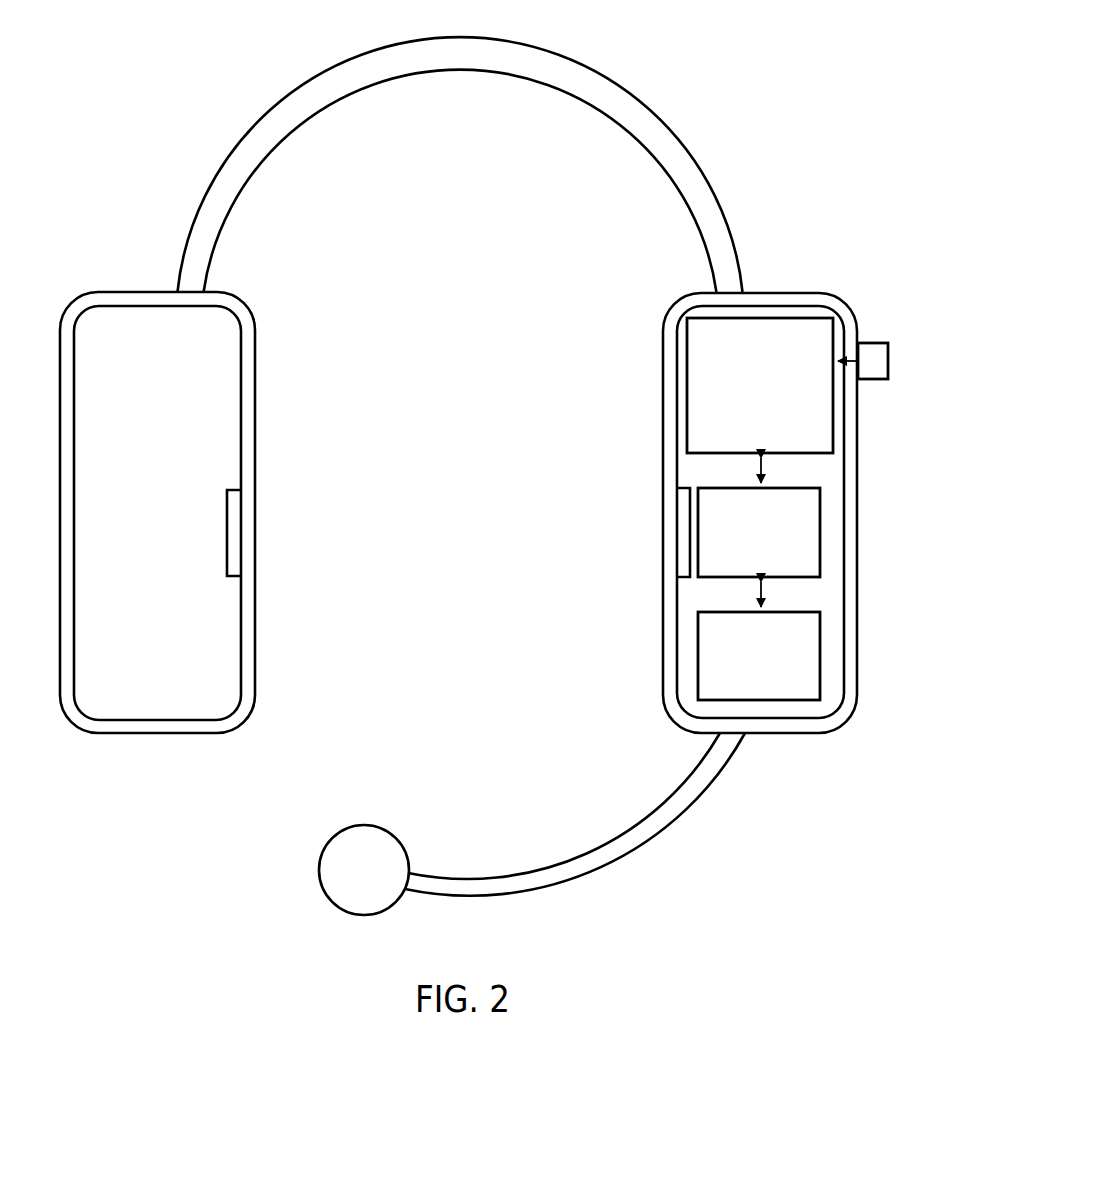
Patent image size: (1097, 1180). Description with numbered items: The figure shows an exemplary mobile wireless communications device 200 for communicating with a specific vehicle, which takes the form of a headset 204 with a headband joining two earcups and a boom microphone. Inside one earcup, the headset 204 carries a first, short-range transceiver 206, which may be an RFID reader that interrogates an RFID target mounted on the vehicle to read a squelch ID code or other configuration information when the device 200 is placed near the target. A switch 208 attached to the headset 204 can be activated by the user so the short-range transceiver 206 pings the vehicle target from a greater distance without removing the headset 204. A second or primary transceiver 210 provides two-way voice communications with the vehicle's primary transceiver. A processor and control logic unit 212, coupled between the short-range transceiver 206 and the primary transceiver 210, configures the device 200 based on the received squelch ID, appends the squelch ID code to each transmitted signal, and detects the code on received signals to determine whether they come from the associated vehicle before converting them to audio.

The mobile wireless communications device 200 is at (676, 94).
The headset 204 is at (685, 148).
The short-range transceiver 206 is at (687, 428).
The switch 208 is at (873, 343).
The primary transceiver 210 is at (698, 640).
The processor and control logic unit 212 is at (698, 522).